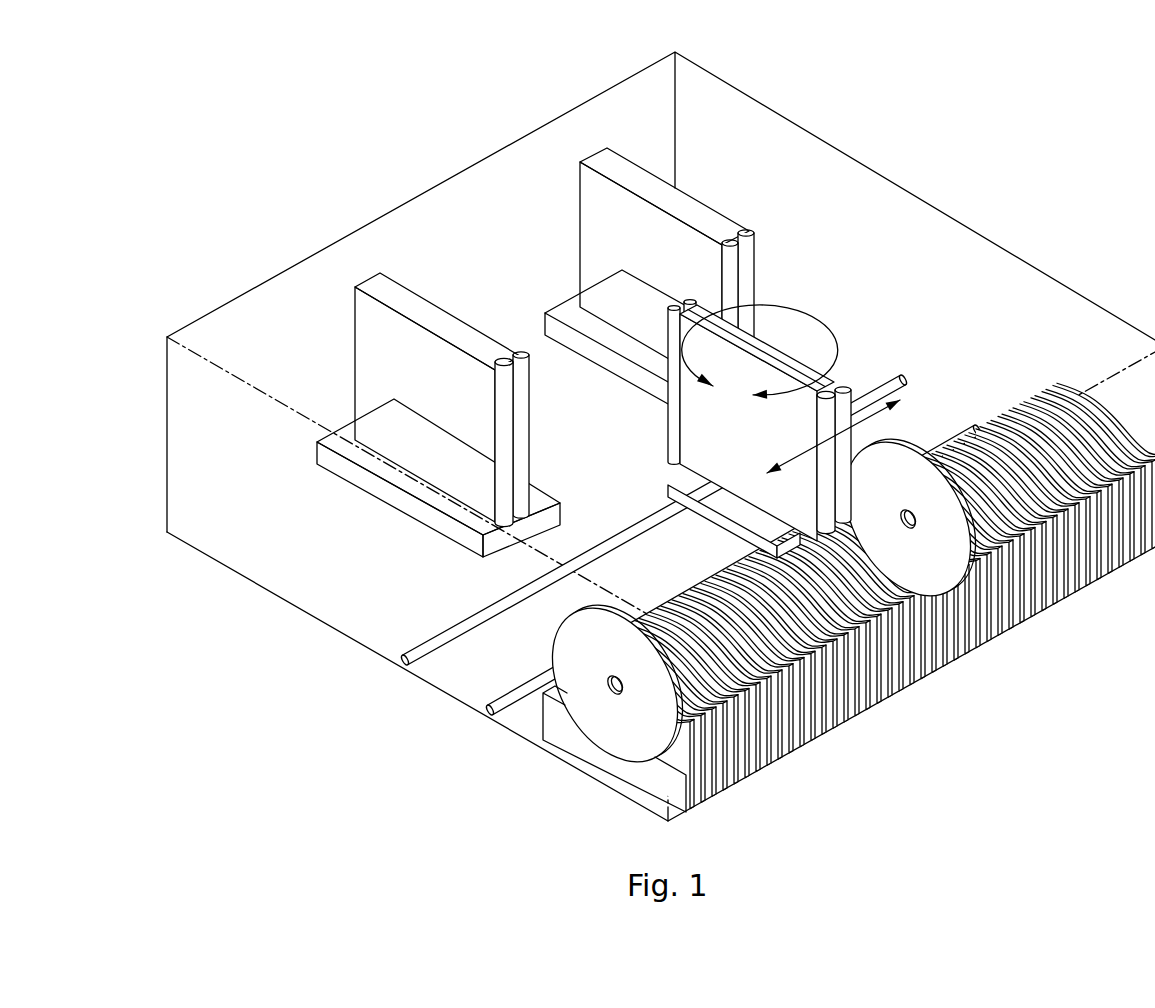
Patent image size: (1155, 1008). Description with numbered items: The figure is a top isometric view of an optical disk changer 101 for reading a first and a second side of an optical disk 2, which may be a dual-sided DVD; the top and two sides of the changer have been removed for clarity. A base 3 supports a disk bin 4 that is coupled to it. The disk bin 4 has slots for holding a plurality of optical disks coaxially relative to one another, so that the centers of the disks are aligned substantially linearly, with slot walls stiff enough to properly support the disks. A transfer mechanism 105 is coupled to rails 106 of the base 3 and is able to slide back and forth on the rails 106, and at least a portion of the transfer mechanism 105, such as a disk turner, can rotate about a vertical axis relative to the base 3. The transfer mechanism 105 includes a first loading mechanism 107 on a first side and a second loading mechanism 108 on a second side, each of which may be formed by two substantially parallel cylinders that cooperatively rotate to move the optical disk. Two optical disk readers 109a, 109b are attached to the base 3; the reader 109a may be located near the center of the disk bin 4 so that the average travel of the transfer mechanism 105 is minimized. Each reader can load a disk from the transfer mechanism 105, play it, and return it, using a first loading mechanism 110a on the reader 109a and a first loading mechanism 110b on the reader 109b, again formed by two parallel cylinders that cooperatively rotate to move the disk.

The optical disk changer 101 is at (774, 90).
The optical disk 2 is at (928, 537).
The base 3 is at (425, 595).
The disk bin 4 is at (573, 740).
The transfer mechanism 105 is at (757, 350).
The rails 106 is at (490, 710).
The first loading mechanism 107 is at (838, 390).
The second loading mechanism 108 is at (684, 302).
The optical disk reader 109a is at (437, 320).
The optical disk reader 109b is at (662, 193).
The first loading mechanism 110a is at (508, 352).
The first loading mechanism 110b is at (740, 230).